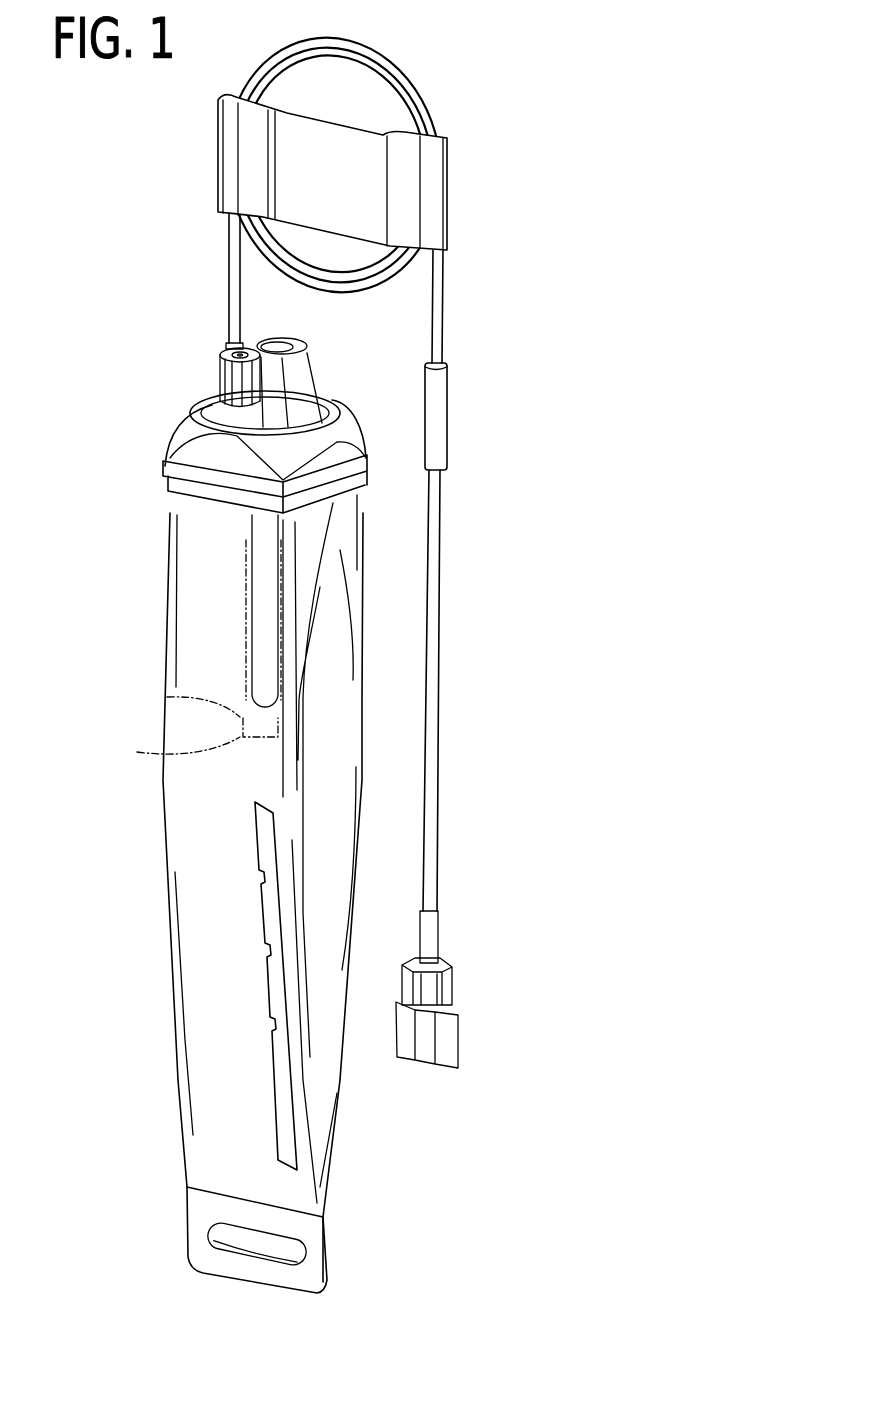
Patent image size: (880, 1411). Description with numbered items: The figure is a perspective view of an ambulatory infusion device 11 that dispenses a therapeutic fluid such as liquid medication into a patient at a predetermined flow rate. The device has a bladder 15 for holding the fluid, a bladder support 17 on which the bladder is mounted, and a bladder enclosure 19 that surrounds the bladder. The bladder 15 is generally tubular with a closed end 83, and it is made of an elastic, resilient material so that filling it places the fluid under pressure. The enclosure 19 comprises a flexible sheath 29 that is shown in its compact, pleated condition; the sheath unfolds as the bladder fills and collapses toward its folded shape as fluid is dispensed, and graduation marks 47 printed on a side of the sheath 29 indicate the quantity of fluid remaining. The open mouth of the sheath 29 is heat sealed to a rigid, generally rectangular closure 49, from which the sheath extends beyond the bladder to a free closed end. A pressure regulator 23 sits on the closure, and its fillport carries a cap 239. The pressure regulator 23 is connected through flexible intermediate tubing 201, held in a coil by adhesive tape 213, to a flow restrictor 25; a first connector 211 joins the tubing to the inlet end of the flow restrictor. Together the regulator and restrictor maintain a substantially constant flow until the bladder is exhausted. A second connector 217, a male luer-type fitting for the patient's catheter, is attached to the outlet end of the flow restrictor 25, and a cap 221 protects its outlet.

The infusion device 11 is at (369, 161).
The adhesive tape 213 is at (385, 172).
The intermediate tubing 201 is at (178, 278).
The cap 239 is at (189, 371).
The pressure regulator 23 is at (324, 370).
The closure 49 is at (216, 452).
The bladder enclosure 19 is at (211, 894).
The sheath 29 is at (155, 825).
The graduation marks 47 is at (334, 986).
The bladder support 17 is at (185, 611).
The closed end 83 is at (171, 699).
The bladder 15 is at (190, 744).
The flow restrictor 25 is at (472, 580).
The first connector 211 is at (486, 416).
The second connector 217 is at (479, 937).
The cap 221 is at (472, 1013).